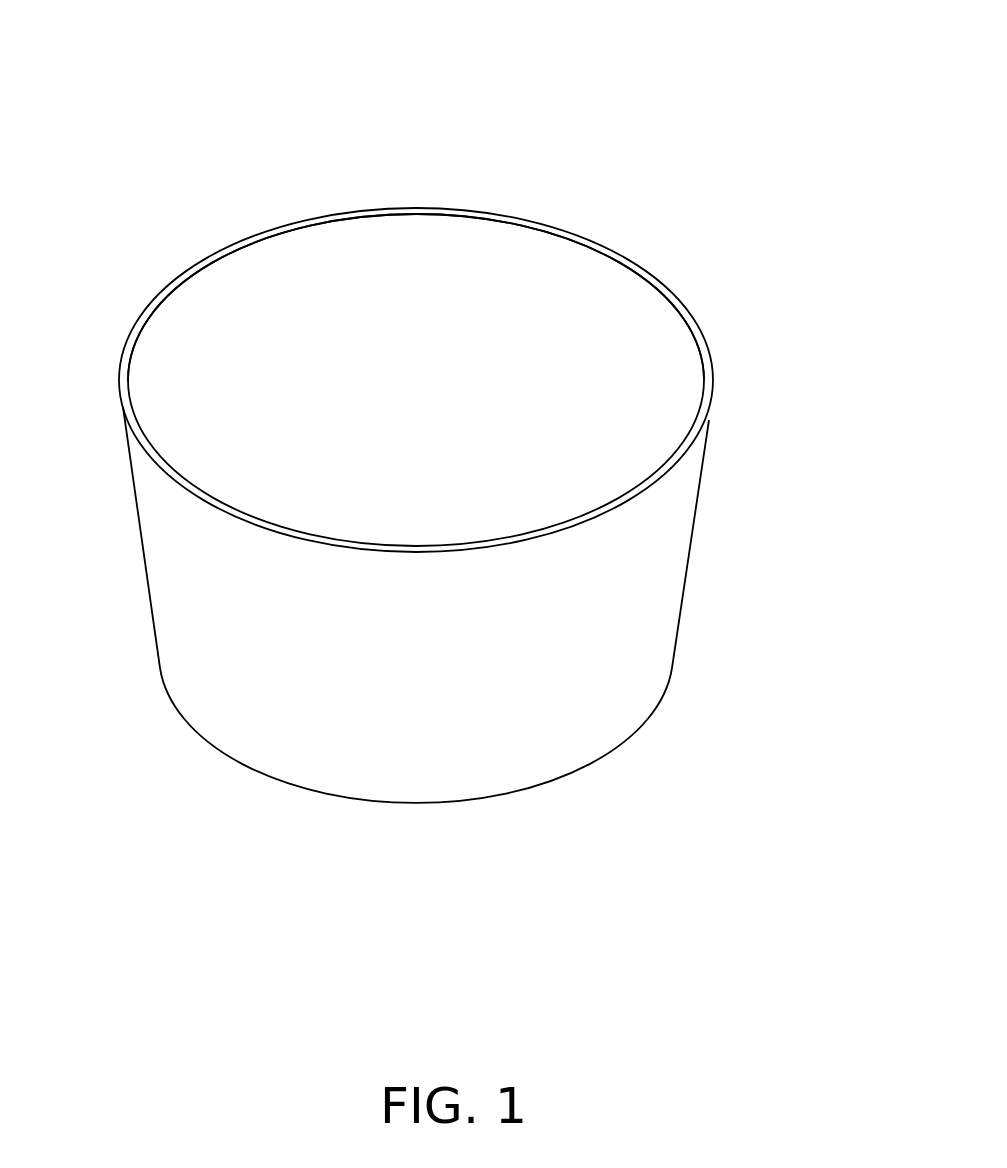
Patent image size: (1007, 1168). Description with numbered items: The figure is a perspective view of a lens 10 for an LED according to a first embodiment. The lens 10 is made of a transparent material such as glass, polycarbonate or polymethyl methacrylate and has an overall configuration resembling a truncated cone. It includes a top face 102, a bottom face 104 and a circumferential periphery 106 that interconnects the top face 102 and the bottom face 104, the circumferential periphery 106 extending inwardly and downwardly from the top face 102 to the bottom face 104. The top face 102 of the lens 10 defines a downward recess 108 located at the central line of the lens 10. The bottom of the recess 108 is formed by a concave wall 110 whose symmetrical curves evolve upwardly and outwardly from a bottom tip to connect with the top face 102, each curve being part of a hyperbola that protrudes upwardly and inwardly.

The lens 10 is at (467, 31).
The top face 102 is at (682, 308).
The bottom face 104 is at (498, 797).
The circumferential periphery 106 is at (692, 550).
The recess 108 is at (505, 413).
The concave wall 110 is at (422, 265).